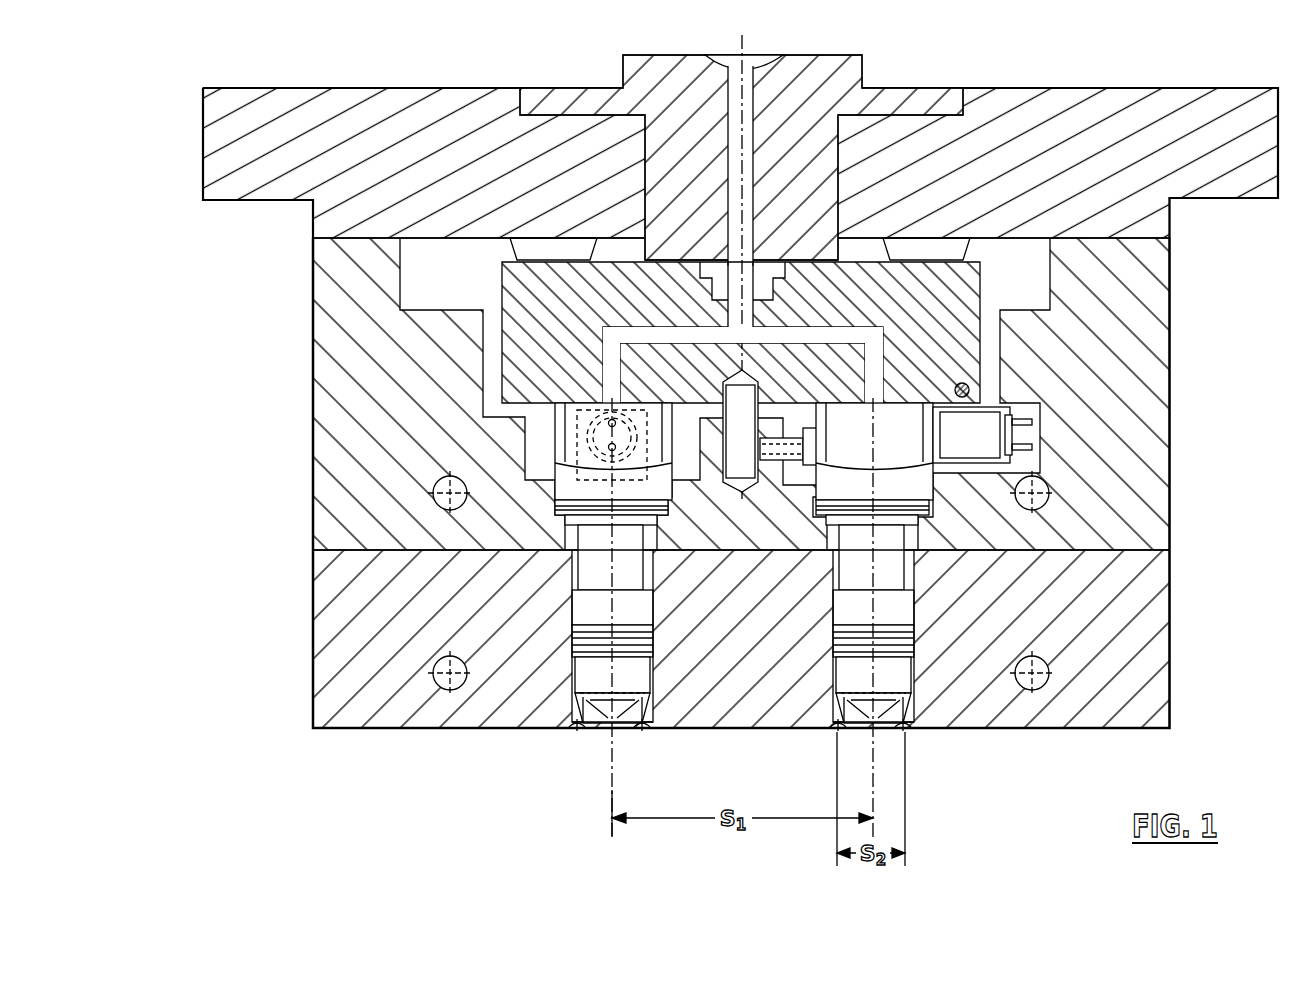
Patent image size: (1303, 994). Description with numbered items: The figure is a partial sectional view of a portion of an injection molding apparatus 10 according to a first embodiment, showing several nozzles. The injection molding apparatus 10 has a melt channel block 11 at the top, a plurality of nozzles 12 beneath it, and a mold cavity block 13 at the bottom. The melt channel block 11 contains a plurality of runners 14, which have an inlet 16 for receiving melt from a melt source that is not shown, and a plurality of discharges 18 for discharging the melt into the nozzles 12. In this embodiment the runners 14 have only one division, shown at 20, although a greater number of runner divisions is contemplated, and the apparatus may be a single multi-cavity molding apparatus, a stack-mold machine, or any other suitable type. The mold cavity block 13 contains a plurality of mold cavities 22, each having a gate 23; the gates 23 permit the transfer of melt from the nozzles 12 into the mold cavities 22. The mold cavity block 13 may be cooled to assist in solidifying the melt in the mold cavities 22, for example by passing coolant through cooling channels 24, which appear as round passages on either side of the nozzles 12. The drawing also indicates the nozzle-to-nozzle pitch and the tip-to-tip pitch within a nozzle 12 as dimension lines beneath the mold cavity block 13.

The injection molding apparatus 10 is at (203, 353).
The melt channel block 11 is at (458, 108).
The nozzles 12 is at (560, 655).
The mold cavity block 13 is at (1150, 612).
The runners 14 is at (750, 97).
The inlet 16 is at (752, 52).
The discharges 18 is at (603, 388).
The division in runners 20 is at (750, 322).
The mold cavities 22 is at (577, 732).
The gate 23 is at (642, 738).
The cooling channels 24 is at (437, 700).